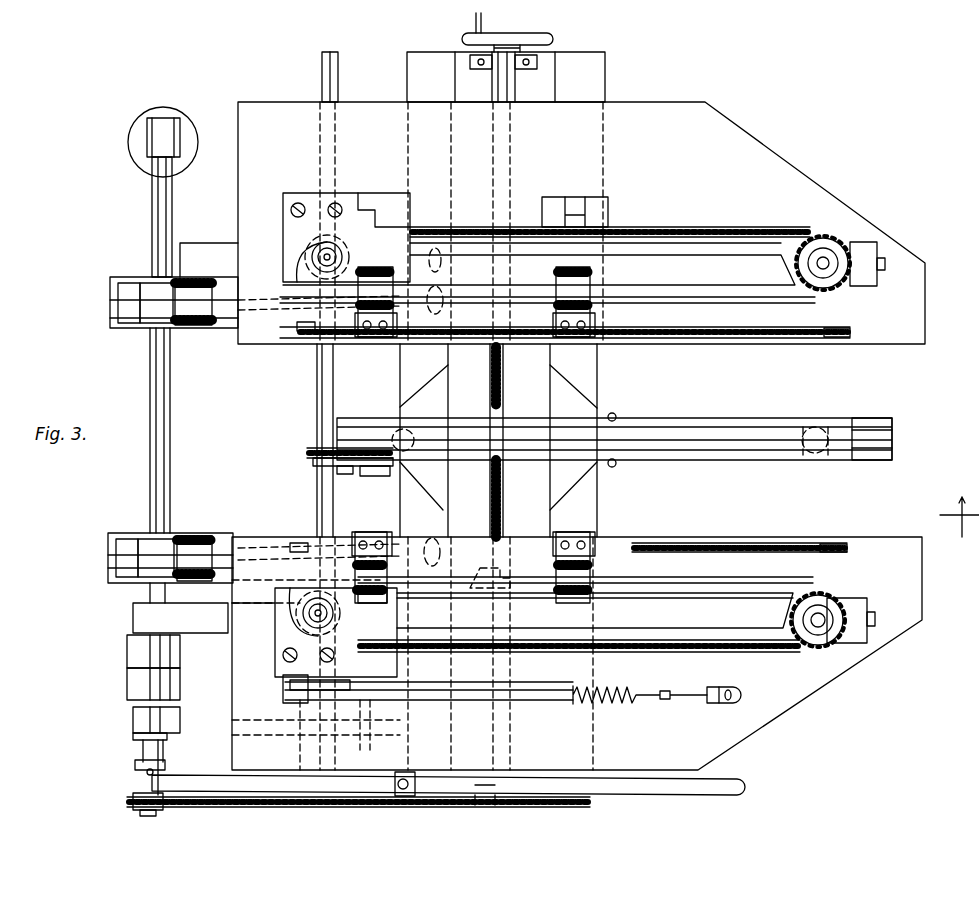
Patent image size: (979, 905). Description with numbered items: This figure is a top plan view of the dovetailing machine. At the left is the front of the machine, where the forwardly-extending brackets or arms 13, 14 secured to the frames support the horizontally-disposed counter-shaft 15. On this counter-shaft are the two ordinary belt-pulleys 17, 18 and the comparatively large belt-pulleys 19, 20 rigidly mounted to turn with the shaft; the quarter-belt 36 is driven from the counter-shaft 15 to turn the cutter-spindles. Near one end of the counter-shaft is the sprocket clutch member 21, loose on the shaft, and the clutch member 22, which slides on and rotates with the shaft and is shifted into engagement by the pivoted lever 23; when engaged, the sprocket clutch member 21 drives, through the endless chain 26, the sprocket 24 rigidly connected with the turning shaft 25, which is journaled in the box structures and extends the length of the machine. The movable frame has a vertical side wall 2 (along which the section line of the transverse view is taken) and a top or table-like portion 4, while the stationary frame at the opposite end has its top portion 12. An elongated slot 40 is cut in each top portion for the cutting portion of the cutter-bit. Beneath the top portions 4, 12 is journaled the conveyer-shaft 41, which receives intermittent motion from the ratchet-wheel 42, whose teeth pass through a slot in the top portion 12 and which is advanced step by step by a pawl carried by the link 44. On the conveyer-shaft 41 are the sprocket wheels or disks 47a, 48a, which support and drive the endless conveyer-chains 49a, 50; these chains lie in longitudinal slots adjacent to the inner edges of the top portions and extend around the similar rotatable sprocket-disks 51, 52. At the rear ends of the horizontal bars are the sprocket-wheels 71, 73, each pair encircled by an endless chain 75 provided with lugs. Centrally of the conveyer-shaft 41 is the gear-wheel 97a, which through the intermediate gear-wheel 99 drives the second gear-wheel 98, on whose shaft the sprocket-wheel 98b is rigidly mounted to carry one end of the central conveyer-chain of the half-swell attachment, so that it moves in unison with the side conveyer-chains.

The vertical side wall 2 is at (92, 503).
The top or table-like portion 4 is at (686, 115).
The top portion 12 is at (773, 708).
The forwardly-extending bracket or arm 13 is at (133, 724).
The forwardly-extending bracket or arm 14 is at (196, 250).
The counter-shaft 15 is at (168, 496).
The belt-pulley 17 is at (127, 686).
The belt-pulley 18 is at (127, 650).
The belt-pulley 19 is at (122, 330).
The belt-pulley 20 is at (198, 533).
The sprocket clutch member 21 is at (133, 800).
The clutch member 22 is at (135, 767).
The lever 23 is at (600, 798).
The sprocket 24 is at (502, 798).
The turning shaft 25 is at (505, 89).
The endless chain 26 is at (333, 807).
The quarter-belt 36 is at (226, 330).
The elongated slot 40 is at (446, 302).
The conveyer-shaft 41 is at (316, 385).
The ratchet-wheel 42 is at (296, 700).
The link 44 is at (455, 690).
The sprocket wheel or disk 47a is at (302, 540).
The sprocket wheel or disk 48a is at (303, 333).
The endless conveyer-chain 49a is at (708, 545).
The endless conveyer-chain 50 is at (745, 340).
The sprocket-disk 51 is at (828, 545).
The sprocket-disk 52 is at (832, 342).
The sprocket-wheel 71 is at (826, 648).
The sprocket-wheel 73 is at (832, 245).
The endless chain 75 is at (696, 230).
The gear-wheel 97a is at (305, 453).
The gear-wheel 98 is at (368, 476).
The sprocket-wheel 98b is at (384, 418).
The intermediate gear-wheel 99 is at (342, 474).